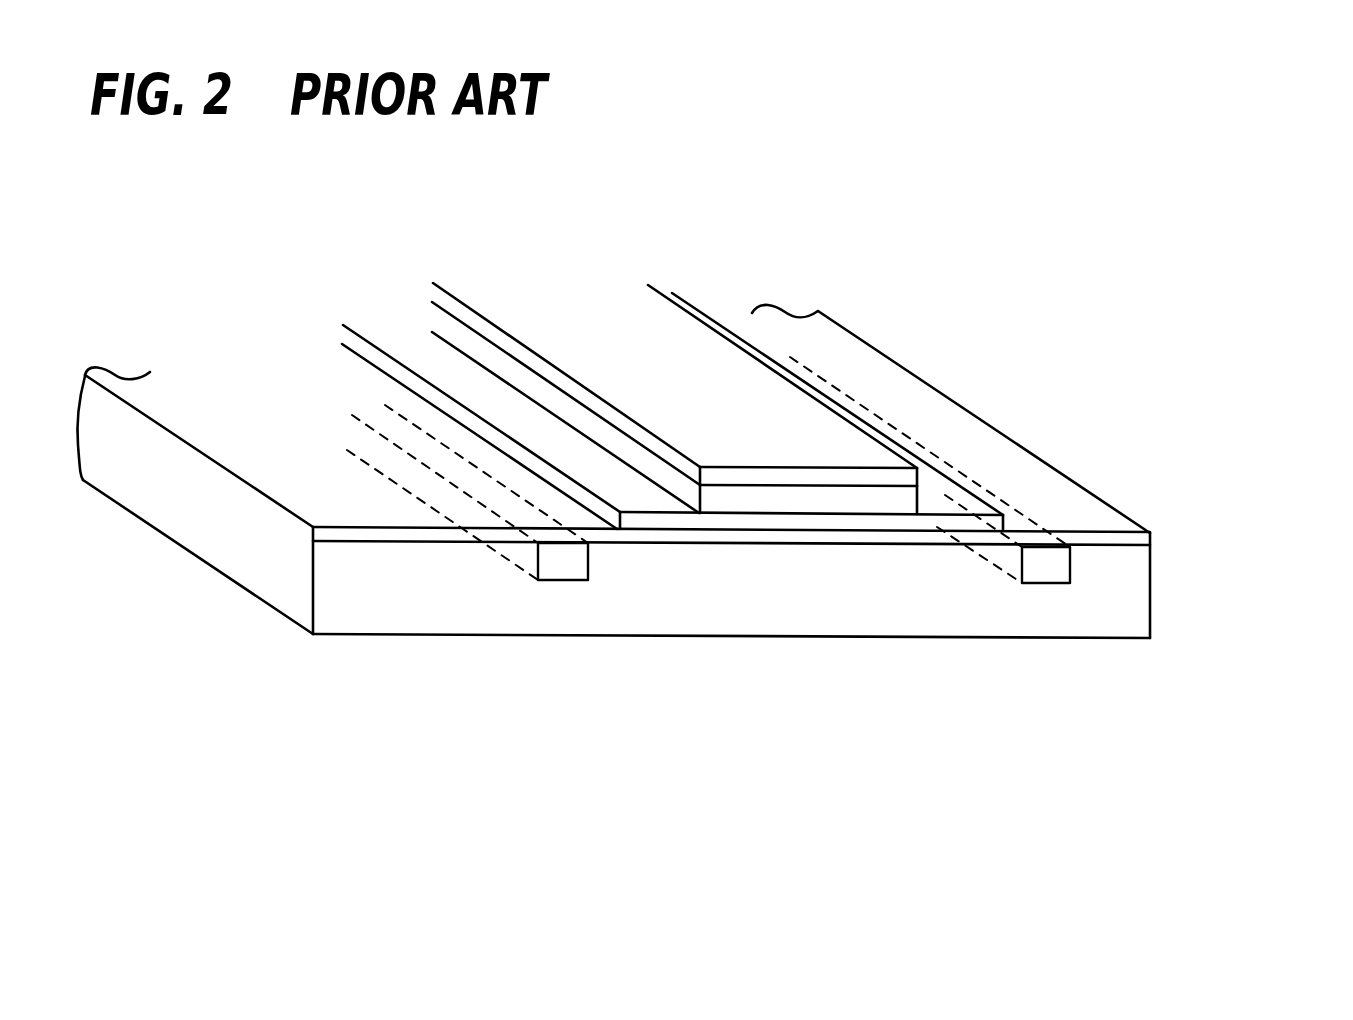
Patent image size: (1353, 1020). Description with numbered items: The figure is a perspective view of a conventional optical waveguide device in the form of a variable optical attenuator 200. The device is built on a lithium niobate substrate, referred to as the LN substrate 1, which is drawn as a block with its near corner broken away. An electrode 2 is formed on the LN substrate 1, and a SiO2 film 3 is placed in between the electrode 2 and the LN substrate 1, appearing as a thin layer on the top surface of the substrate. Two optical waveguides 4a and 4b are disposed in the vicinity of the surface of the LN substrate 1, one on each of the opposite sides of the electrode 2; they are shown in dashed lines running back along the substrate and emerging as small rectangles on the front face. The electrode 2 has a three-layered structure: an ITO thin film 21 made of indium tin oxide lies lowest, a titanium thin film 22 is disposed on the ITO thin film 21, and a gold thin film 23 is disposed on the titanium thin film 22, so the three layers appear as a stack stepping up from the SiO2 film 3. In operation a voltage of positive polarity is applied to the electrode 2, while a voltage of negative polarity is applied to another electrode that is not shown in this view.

The variable optical attenuator 200 is at (757, 285).
The LN substrate 1 is at (236, 563).
The electrode 2 is at (677, 275).
The SiO2 film 3 is at (1118, 538).
The optical waveguide 4a is at (563, 565).
The optical waveguide 4b is at (1045, 570).
The ITO thin film 21 is at (967, 525).
The titanium thin film 22 is at (853, 497).
The gold thin film 23 is at (792, 475).